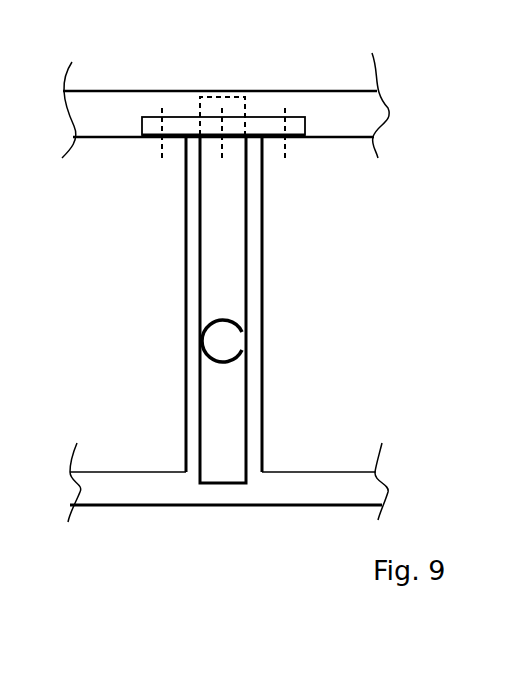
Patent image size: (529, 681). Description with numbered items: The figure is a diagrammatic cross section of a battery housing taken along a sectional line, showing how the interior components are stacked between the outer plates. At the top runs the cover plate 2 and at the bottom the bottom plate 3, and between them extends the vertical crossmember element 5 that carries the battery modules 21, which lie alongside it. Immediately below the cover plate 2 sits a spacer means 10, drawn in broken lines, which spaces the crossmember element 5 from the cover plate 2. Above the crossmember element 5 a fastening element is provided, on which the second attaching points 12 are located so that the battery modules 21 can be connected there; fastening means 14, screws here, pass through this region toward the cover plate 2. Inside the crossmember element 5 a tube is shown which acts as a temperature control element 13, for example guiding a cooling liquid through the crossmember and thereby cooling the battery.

The cover plate 2 is at (323, 91).
The bottom plate 3 is at (297, 506).
The crossmember element 5 is at (248, 247).
The spacer means 10 is at (237, 106).
The second attaching points 12 is at (154, 114).
The temperature control element 13 is at (233, 345).
The fastening means 14 is at (158, 153).
The battery modules 21 is at (184, 313).